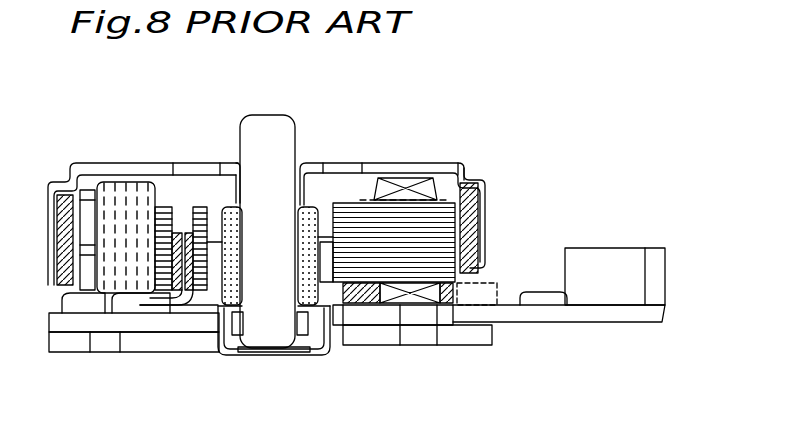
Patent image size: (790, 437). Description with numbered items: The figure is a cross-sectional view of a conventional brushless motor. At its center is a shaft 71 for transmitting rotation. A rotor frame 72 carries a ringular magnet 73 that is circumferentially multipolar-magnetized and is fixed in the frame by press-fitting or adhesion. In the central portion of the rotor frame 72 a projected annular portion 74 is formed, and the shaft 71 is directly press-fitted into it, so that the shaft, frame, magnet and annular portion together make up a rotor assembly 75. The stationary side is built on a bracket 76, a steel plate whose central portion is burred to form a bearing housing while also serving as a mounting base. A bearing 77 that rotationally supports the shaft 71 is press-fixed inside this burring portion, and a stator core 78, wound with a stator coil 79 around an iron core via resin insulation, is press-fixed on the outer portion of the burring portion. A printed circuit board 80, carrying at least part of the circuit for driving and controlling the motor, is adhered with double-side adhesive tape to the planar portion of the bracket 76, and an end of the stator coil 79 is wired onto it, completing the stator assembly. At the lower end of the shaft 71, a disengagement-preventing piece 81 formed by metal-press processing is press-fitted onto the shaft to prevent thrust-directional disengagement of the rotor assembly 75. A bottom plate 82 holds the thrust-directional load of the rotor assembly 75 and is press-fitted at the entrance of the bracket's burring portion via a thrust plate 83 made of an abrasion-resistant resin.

The shaft 71 is at (243, 117).
The rotor frame 72 is at (383, 163).
The ringular magnet 73 is at (470, 220).
The projected annular portion 74 is at (310, 172).
The rotor assembly 75 is at (467, 153).
The bracket 76 is at (343, 337).
The bearing 77 is at (318, 282).
The stator core 78 is at (443, 295).
The stator coil 79 is at (397, 243).
The printed circuit board 80 is at (530, 326).
The disengagement-preventing piece 81 is at (327, 348).
The bottom plate 82 is at (283, 363).
The thrust plate 83 is at (248, 360).